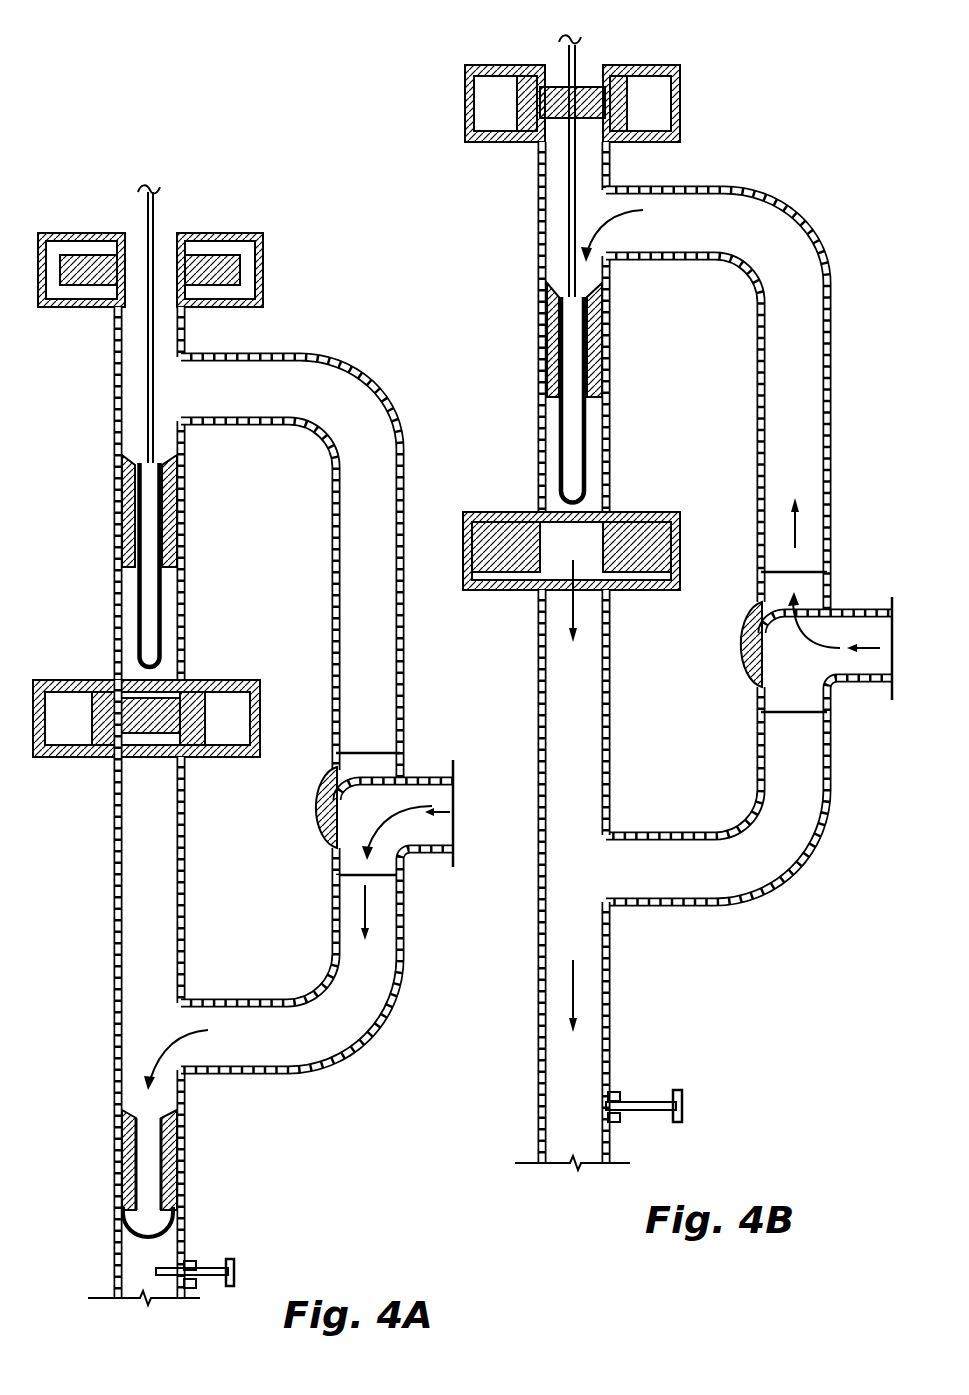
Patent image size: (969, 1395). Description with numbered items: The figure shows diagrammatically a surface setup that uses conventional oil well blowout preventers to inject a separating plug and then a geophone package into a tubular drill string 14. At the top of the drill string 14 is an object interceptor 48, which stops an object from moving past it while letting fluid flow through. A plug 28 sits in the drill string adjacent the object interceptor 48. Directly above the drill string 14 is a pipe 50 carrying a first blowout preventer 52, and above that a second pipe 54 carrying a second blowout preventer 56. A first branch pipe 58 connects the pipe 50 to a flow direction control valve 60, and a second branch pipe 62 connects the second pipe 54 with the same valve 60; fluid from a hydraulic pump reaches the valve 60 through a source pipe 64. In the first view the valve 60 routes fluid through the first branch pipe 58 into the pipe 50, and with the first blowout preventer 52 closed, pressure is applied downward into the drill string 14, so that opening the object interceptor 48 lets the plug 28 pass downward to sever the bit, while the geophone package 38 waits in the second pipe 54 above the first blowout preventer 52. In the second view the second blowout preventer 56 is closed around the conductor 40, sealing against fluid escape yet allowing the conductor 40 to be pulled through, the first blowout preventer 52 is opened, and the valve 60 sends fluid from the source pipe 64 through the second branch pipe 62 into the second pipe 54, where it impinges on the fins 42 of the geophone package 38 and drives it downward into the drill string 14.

In FIG. 4A, the tubular drill string 14 is at (188, 1302).
In FIG. 4A, the plug 28 is at (153, 1160).
In FIG. 4A, the geophone package 38 is at (155, 622).
In FIG. 4B, the geophone package 38 is at (577, 420).
In FIG. 4A, the conductor 40 is at (153, 218).
In FIG. 4B, the conductor 40 is at (577, 52).
In FIG. 4A, the fins 42 is at (178, 512).
In FIG. 4B, the fins 42 is at (538, 352).
In FIG. 4A, the object interceptor 48 is at (212, 1270).
In FIG. 4A, the pipe 50 is at (115, 908).
In FIG. 4B, the pipe 50 is at (608, 720).
In FIG. 4A, the first blowout preventer 52 is at (87, 758).
In FIG. 4B, the first blowout preventer 52 is at (510, 591).
In FIG. 4A, the second pipe 54 is at (114, 414).
In FIG. 4B, the second pipe 54 is at (536, 225).
In FIG. 4A, the second blowout preventer 56 is at (92, 308).
In FIG. 4B, the second blowout preventer 56 is at (503, 133).
In FIG. 4A, the first branch pipe 58 is at (402, 975).
In FIG. 4A, the flow direction control valve 60 is at (316, 808).
In FIG. 4B, the flow direction control valve 60 is at (745, 640).
In FIG. 4A, the second branch pipe 62 is at (408, 490).
In FIG. 4B, the second branch pipe 62 is at (829, 290).
In FIG. 4A, the source pipe 64 is at (418, 775).
In FIG. 4B, the source pipe 64 is at (870, 607).